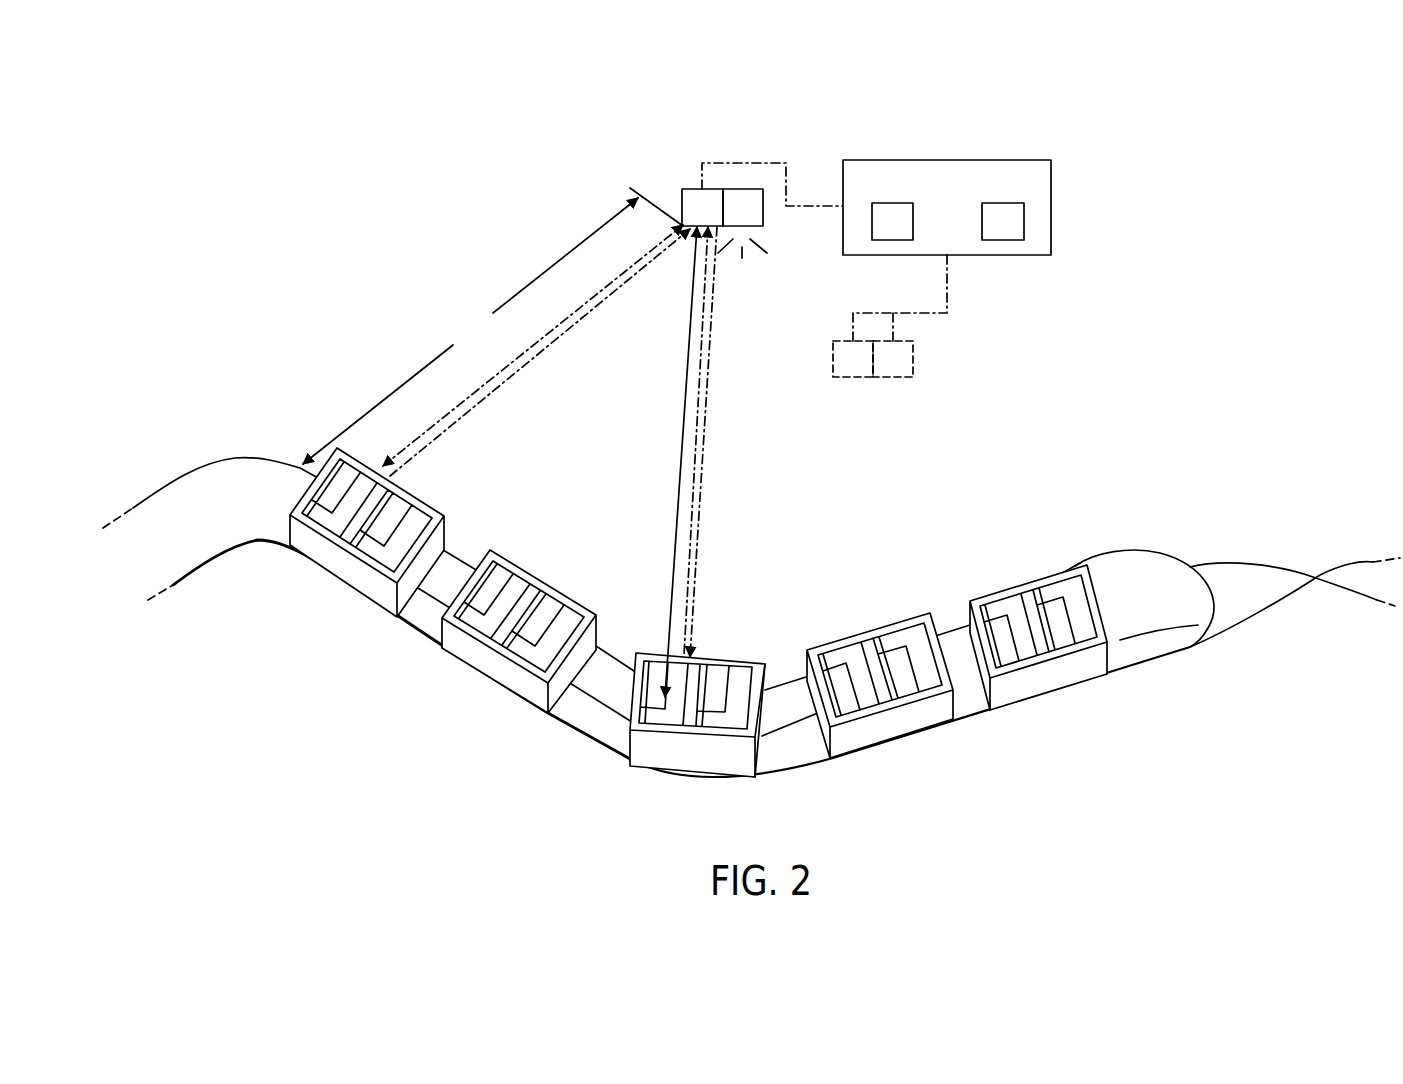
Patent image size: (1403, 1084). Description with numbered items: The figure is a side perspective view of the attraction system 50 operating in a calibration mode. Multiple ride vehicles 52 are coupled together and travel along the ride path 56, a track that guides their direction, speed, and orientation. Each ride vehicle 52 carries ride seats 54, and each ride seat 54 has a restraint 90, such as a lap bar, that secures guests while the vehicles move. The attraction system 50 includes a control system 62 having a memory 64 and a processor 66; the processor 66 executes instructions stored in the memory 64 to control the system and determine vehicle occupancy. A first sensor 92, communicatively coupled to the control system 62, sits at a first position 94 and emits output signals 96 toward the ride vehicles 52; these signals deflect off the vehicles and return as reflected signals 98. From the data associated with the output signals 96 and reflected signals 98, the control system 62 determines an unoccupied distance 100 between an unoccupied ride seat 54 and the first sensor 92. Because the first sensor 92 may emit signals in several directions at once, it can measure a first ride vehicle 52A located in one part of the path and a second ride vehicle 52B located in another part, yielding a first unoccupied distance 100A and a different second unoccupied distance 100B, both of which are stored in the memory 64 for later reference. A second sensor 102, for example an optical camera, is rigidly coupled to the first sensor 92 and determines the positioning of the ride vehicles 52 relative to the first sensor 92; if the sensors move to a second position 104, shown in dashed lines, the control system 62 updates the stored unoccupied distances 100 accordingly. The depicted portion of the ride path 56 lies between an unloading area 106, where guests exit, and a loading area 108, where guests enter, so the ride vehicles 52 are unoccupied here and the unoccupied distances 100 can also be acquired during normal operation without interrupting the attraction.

The attraction system 50 is at (955, 366).
The ride vehicle 52 is at (492, 668).
The first ride vehicle 52A is at (352, 573).
The second ride vehicle 52B is at (707, 760).
The ride seat 54 is at (268, 492).
The ride path 56 is at (203, 565).
The control system 62 is at (966, 229).
The memory 64 is at (893, 240).
The processor 66 is at (1003, 240).
The restraint 90 is at (392, 493).
The first sensor 92 is at (692, 189).
The first position 94 is at (509, 130).
The output signal 96 is at (542, 343).
The reflected signal 98 is at (550, 327).
The unoccupied distance 100 is at (443, 383).
The first unoccupied distance 100A is at (470, 331).
The second unoccupied distance 100B is at (682, 440).
The second sensor 102 is at (763, 217).
The second position 104 is at (819, 393).
The unloading area 106 is at (147, 413).
The loading area 108 is at (1301, 470).